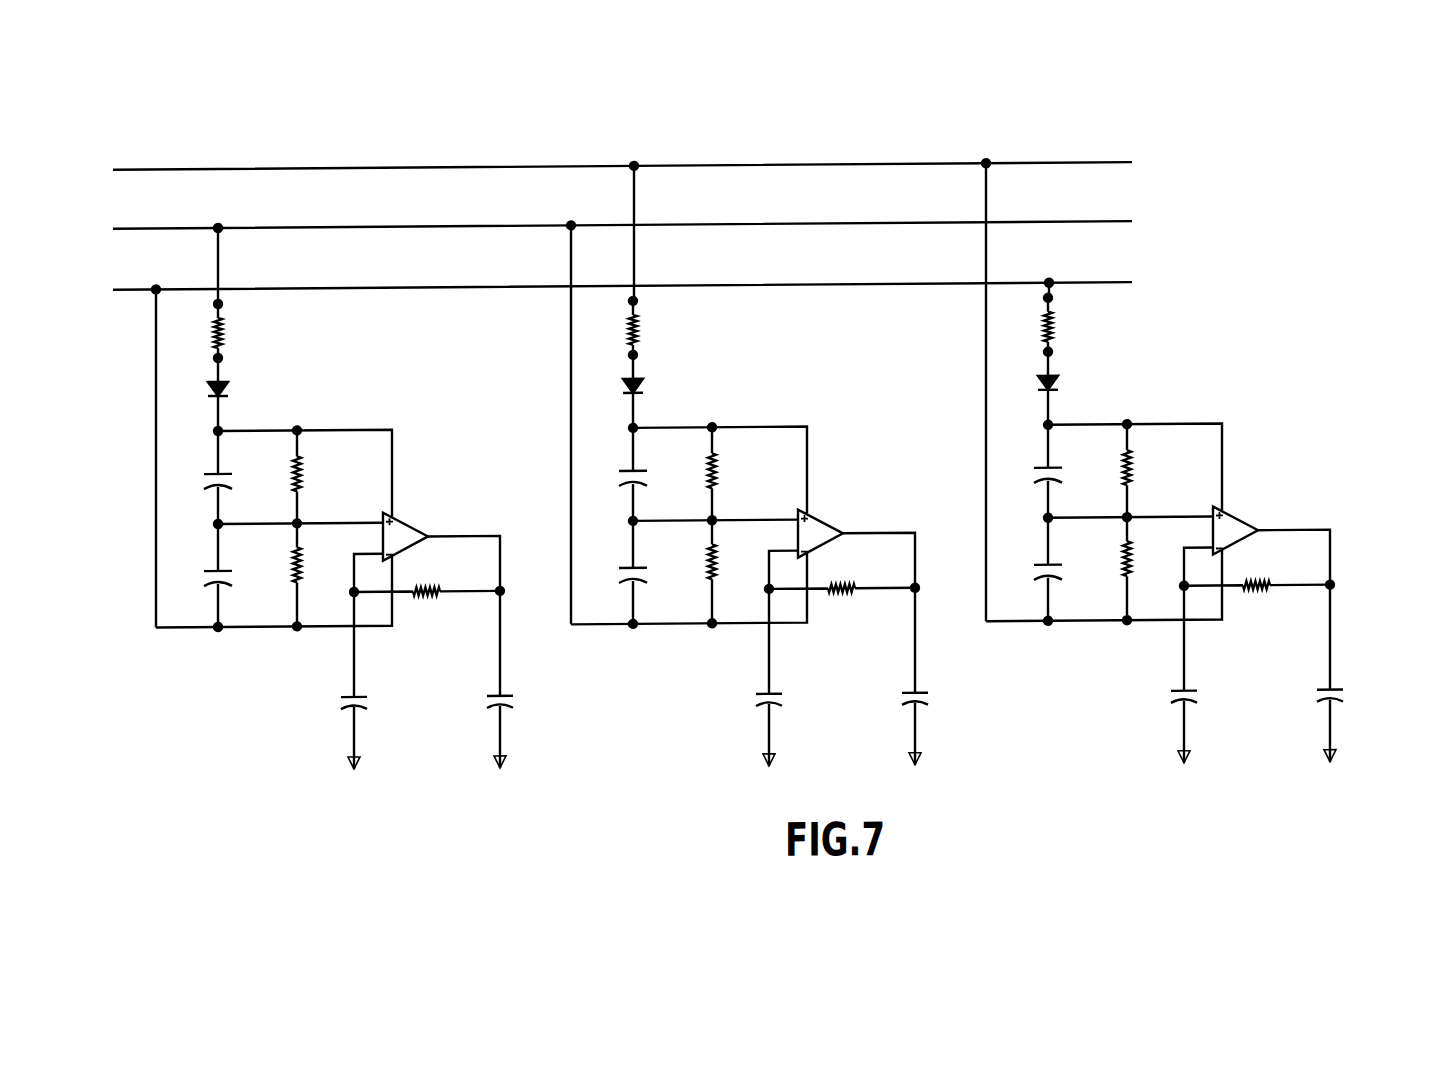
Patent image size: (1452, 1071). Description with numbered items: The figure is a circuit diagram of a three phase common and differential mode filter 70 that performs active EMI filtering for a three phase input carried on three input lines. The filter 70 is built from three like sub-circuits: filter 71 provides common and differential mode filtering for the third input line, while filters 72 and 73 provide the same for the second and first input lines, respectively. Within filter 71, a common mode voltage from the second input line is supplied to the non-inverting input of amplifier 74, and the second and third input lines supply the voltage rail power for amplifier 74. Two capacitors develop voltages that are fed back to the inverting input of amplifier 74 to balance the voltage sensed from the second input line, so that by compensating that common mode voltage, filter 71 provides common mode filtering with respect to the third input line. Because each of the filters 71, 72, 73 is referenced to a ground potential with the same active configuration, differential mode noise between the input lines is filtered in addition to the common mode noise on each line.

The three phase common and differential mode filter 70 is at (866, 110).
The filter 71 is at (398, 398).
The filter 72 is at (804, 463).
The filter 73 is at (1217, 460).
The amplifier 74 is at (414, 527).